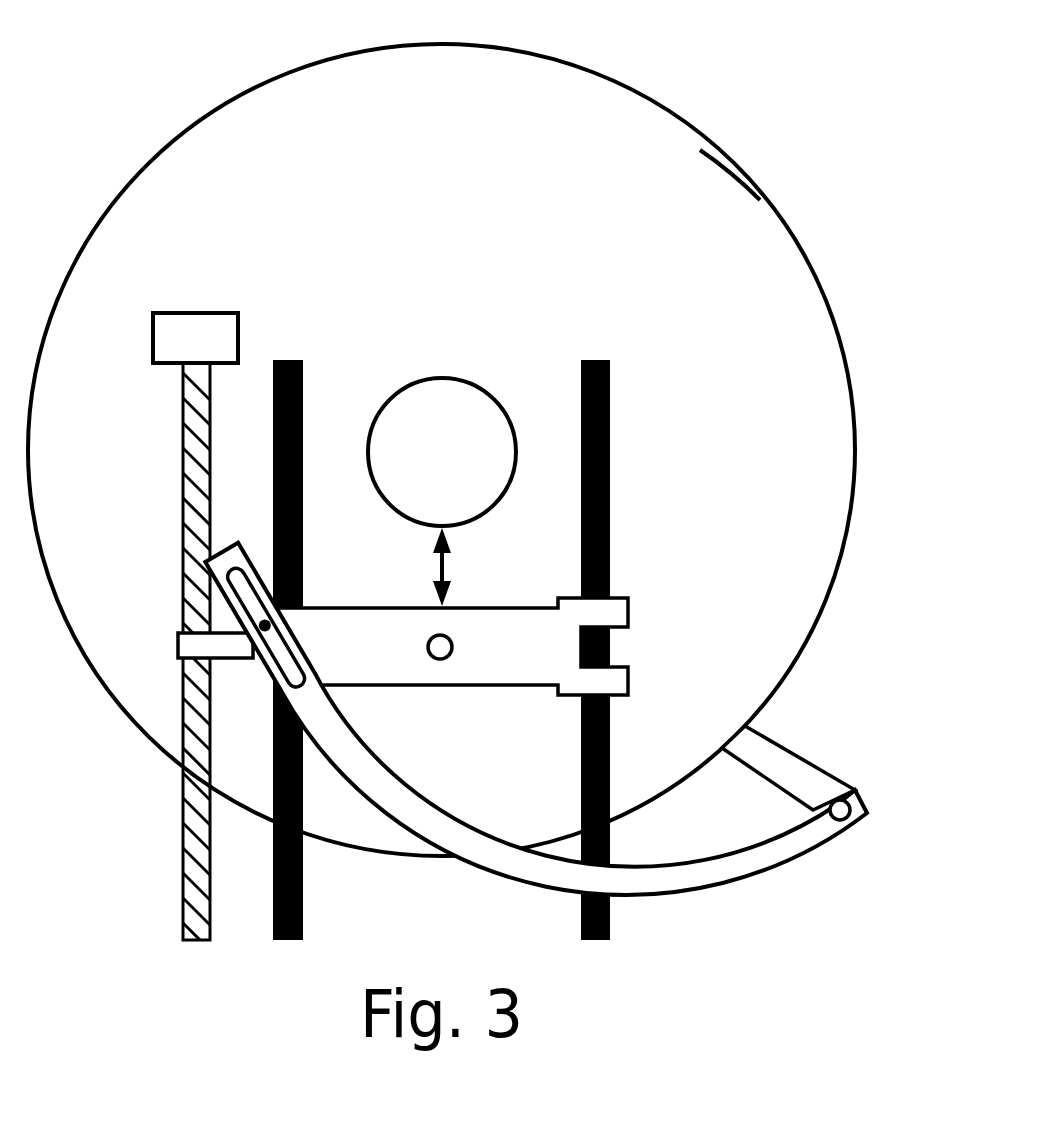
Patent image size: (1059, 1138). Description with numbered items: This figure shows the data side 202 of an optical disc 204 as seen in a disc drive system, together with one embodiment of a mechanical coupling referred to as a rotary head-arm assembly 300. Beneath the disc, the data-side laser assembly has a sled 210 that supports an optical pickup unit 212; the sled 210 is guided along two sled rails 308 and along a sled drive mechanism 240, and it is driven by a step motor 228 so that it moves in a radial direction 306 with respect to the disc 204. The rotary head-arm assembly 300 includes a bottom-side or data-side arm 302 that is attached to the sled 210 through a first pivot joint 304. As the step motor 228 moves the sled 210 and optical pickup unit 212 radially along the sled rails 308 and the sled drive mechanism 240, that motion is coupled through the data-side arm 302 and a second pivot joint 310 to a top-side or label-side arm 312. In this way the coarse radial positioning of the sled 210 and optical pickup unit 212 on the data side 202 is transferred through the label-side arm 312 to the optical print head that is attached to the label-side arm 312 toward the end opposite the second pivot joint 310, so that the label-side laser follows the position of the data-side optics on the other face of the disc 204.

The data side 202 is at (623, 110).
The optical disc 204 is at (732, 158).
The sled 210 is at (485, 615).
The optical pickup unit 212 is at (448, 655).
The step motor 228 is at (223, 313).
The sled drive mechanism 240 is at (182, 438).
The rotary head-arm assembly 300 is at (790, 939).
The data-side arm 302 is at (402, 777).
The first pivot joint 304 is at (270, 624).
The radial direction 306 is at (437, 567).
The sled rails 308 is at (300, 360).
The second pivot joint 310 is at (828, 811).
The label-side arm 312 is at (787, 753).